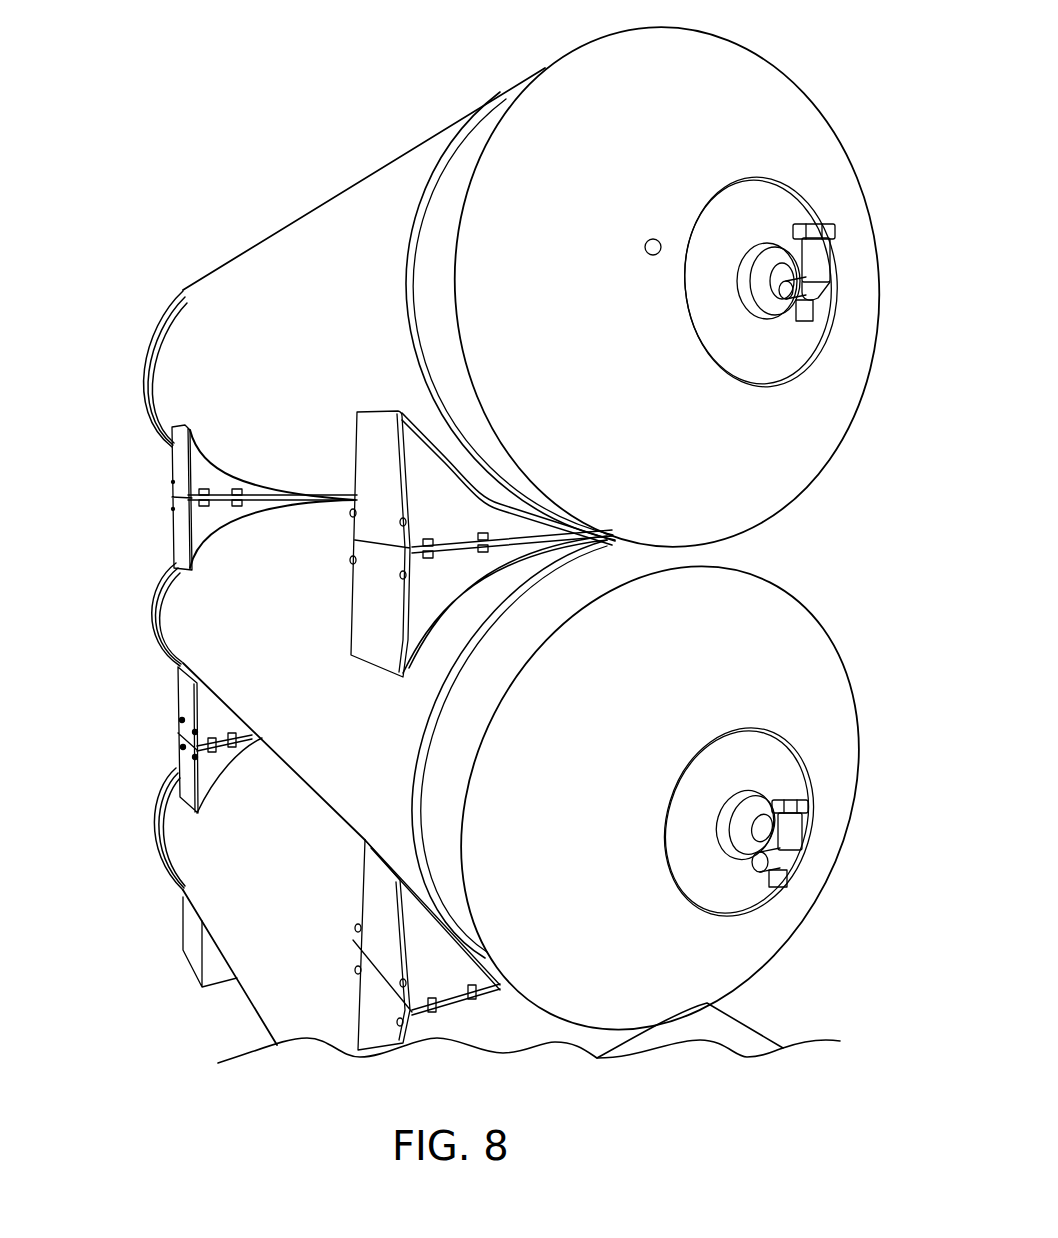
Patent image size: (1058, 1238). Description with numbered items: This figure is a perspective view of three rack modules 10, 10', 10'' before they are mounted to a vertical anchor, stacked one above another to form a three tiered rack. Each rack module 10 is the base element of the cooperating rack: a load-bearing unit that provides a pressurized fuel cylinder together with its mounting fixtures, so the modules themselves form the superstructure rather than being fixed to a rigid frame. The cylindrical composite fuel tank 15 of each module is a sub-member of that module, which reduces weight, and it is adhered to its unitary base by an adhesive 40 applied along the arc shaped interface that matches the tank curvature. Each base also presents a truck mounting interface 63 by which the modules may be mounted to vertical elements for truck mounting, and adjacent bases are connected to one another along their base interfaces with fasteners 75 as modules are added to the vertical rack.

The rack module 10 is at (168, 906).
The rack module 10' is at (494, 798).
The rack module 10'' is at (473, 287).
The cylindrical composite fuel tank 15 is at (292, 367).
The adhesive 40 is at (440, 436).
The truck mounting interface 63 is at (180, 463).
The fasteners 75 is at (452, 560).